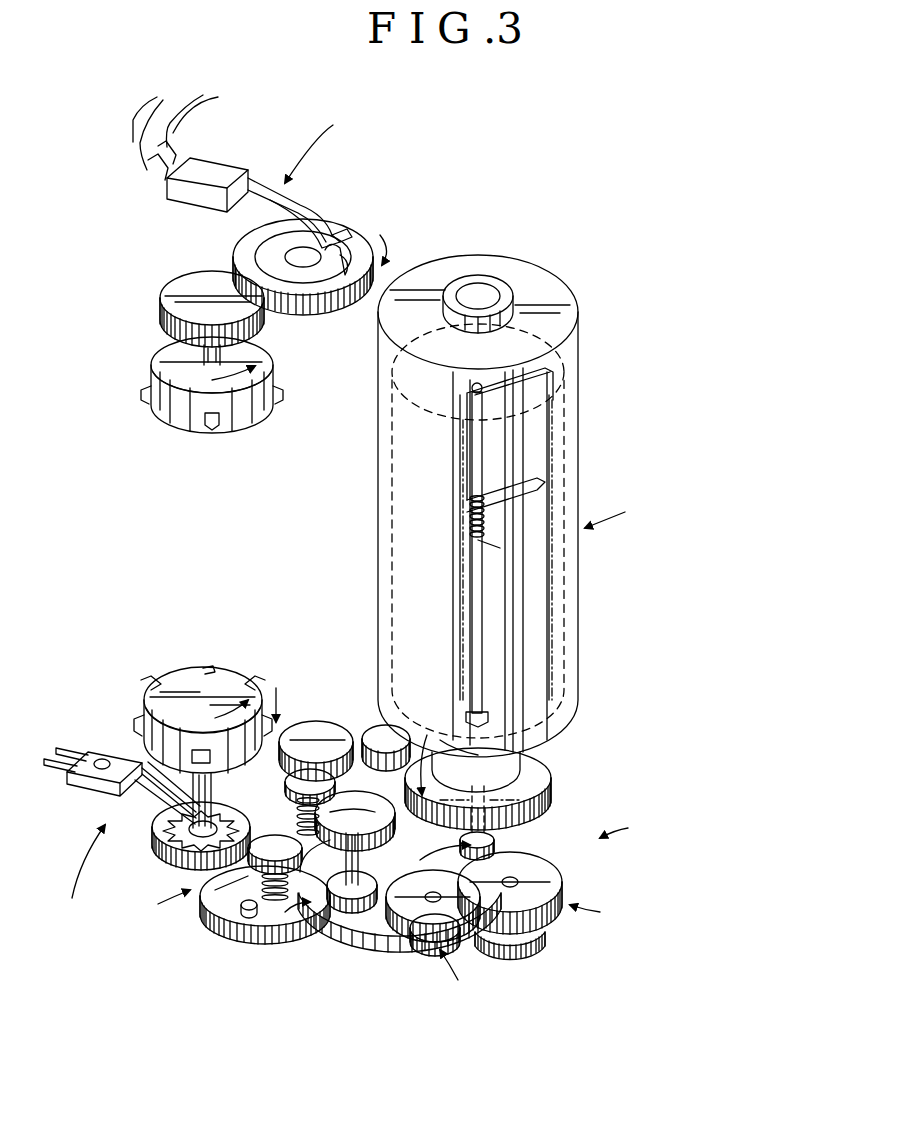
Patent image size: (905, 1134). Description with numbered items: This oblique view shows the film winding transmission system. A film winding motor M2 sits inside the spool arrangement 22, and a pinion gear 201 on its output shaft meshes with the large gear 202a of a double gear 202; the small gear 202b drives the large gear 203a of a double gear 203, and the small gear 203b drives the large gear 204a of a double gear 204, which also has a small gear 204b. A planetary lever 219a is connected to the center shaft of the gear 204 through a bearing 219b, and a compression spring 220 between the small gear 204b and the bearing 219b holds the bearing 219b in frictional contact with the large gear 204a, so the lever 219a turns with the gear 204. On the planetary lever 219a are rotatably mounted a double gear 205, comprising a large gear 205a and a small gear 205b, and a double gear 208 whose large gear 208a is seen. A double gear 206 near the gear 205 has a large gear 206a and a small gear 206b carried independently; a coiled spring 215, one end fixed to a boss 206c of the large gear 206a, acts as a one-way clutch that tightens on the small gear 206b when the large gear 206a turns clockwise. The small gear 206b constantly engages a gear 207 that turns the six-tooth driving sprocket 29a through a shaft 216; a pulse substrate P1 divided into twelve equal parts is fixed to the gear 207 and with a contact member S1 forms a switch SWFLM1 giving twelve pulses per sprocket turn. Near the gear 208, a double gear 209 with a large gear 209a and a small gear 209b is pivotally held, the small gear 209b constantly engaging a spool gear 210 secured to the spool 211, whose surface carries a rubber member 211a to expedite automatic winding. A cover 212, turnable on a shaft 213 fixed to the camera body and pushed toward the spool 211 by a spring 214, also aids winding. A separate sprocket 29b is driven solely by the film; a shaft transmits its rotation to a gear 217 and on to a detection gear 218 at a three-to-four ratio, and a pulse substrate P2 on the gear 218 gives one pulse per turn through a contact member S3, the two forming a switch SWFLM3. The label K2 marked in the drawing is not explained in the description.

The contact member S3 is at (224, 166).
The switch SWFLM3 is at (346, 144).
The pulse substrate P2 is at (340, 226).
The detection gear 218 is at (366, 229).
The gear 217 is at (160, 300).
The sprocket 29b is at (180, 422).
The spool arrangement 22 is at (515, 523).
The film winding motor M2 is at (378, 440).
The rubber member 211a is at (392, 476).
The spool 211 is at (580, 690).
The cover 212 is at (560, 412).
The spring 214 is at (545, 484).
The shaft 213 is at (470, 580).
The spool gear 210 is at (550, 778).
The double gear 209 is at (500, 846).
The large gear 209a is at (427, 748).
The small gear 209b is at (370, 758).
The double gear 208 is at (275, 690).
The large gear 208a is at (308, 722).
The large gear 205a is at (362, 736).
The compression spring 220 is at (290, 792).
The bearing 219b is at (292, 820).
The double gear 205 is at (356, 905).
The small gear 205b is at (340, 905).
The small gear 204b is at (232, 742).
The driving sprocket 29a is at (178, 683).
The gear 207 is at (164, 862).
The pulse substrate P1 is at (160, 846).
The shaft 216 is at (164, 806).
The contact member S1 is at (86, 786).
The switch SWFLM1 is at (70, 879).
The double gear 204 is at (160, 906).
The large gear 204a is at (340, 935).
The double gear 206 is at (292, 945).
The large gear 206a is at (246, 936).
The small gear 206b is at (220, 900).
The boss 206c is at (241, 910).
The coiled spring 215 is at (272, 905).
The planetary lever 219a is at (404, 922).
The large gear 203a is at (432, 944).
The small gear 203b is at (460, 938).
The double gear 203 is at (455, 978).
The large gear 202a is at (565, 876).
The small gear 202b is at (545, 926).
The double gear 202 is at (600, 915).
The pinion gear 201 is at (498, 860).
The gear train K2 is at (625, 826).